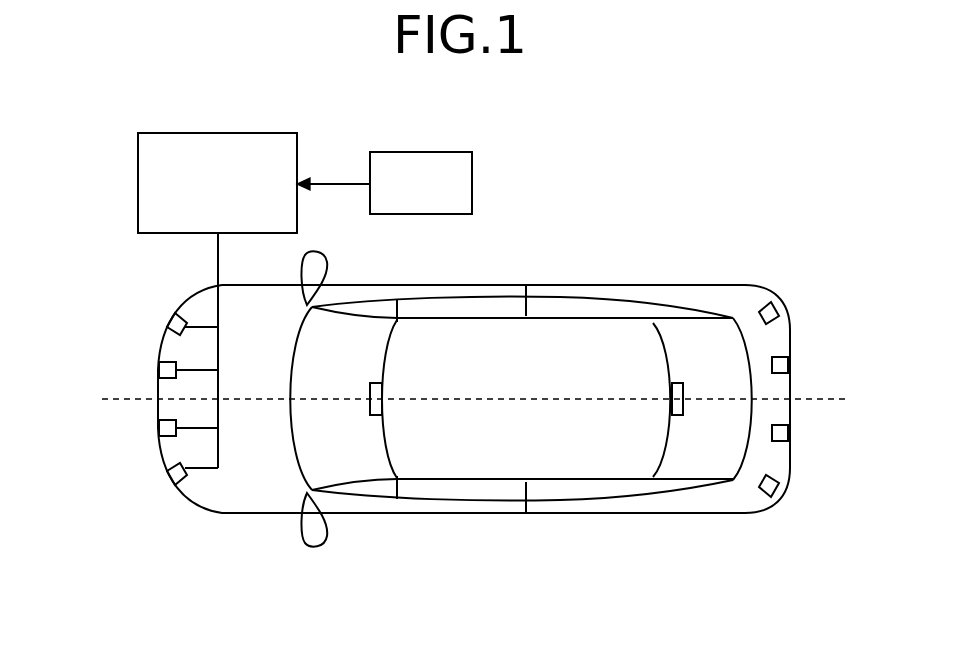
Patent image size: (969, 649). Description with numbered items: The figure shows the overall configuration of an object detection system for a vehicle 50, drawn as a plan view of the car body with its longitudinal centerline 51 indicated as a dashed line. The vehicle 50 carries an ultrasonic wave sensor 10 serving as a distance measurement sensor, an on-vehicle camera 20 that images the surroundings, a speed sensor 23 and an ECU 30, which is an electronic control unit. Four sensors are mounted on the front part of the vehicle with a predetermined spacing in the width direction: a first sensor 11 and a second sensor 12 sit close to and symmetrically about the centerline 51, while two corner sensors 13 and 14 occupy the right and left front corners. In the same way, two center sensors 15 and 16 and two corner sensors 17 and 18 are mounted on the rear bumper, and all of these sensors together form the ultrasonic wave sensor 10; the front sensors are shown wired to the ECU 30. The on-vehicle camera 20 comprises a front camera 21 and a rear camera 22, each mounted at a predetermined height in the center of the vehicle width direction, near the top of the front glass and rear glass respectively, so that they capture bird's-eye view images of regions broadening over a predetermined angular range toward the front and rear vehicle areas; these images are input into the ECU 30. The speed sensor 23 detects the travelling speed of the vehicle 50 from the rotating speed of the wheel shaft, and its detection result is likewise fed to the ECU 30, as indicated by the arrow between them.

The ultrasonic wave sensor 10 is at (103, 271).
The first sensor 11 is at (159, 367).
The second sensor 12 is at (159, 429).
The corner sensor 13 is at (170, 319).
The corner sensor 14 is at (168, 478).
The center sensor 15 is at (788, 366).
The center sensor 16 is at (788, 433).
The corner sensor 17 is at (778, 307).
The corner sensor 18 is at (781, 492).
The on-vehicle camera 20 is at (568, 580).
The front camera 21 is at (382, 410).
The rear camera 22 is at (672, 410).
The speed sensor 23 is at (443, 151).
The ECU 30 is at (262, 133).
The vehicle 50 is at (627, 285).
The centerline 51 is at (495, 399).